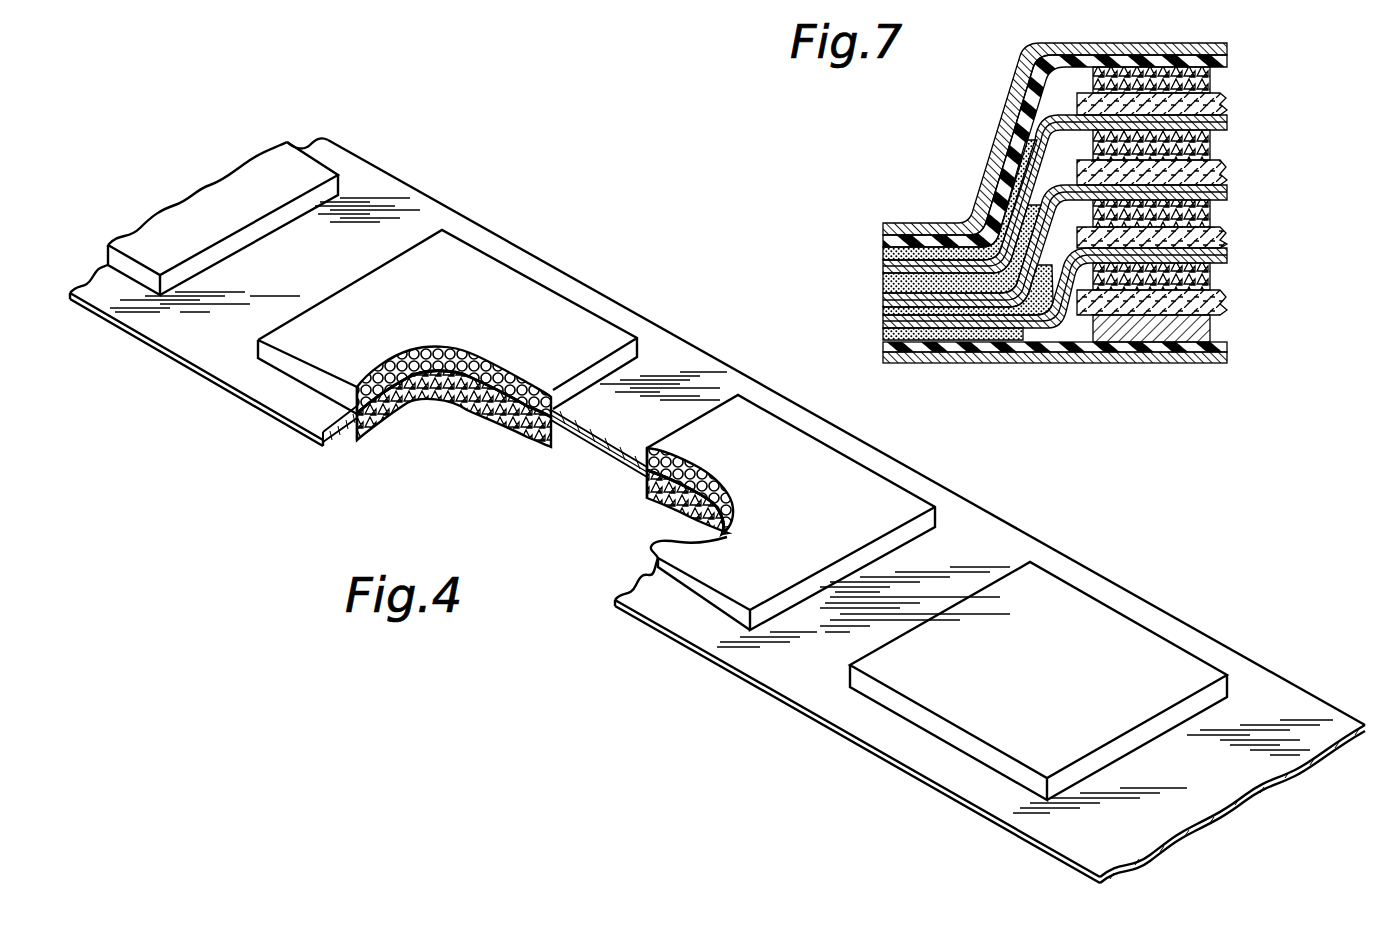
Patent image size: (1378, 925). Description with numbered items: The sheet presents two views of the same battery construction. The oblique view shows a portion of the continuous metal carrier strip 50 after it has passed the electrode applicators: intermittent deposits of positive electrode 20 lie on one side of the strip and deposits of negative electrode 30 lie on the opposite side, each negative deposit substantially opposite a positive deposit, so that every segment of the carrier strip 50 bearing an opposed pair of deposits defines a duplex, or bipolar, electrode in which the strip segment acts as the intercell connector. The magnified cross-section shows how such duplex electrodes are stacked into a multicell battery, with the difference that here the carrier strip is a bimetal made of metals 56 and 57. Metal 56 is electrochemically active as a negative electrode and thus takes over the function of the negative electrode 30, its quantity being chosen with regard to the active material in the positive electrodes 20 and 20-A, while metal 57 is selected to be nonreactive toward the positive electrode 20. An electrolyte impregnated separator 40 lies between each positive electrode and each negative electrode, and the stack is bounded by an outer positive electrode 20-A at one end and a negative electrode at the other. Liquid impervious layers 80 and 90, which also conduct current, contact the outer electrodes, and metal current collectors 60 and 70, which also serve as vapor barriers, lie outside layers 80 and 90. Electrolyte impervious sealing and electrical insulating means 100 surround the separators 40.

In FIG. 4, the positive electrode 20 is at (415, 400).
In FIG. 7, the positive electrode 20 is at (1212, 148).
In FIG. 7, the outer positive electrode 20-A is at (1212, 80).
In FIG. 4, the negative electrode 30 is at (220, 195).
In FIG. 7, the negative electrode 30 is at (1212, 330).
In FIG. 7, the electrolyte impregnated separator 40 is at (1230, 105).
In FIG. 4, the carrier strip 50 is at (380, 195).
In FIG. 7, the carrier strip 50 is at (1229, 185).
In FIG. 7, the active metal 56 is at (1229, 122).
In FIG. 7, the nonreactive metal 57 is at (1229, 128).
In FIG. 7, the metal current collector 60 is at (1229, 46).
In FIG. 7, the metal current collector 70 is at (1229, 360).
In FIG. 7, the liquid impervious layer 80 is at (1229, 60).
In FIG. 7, the liquid impervious layer 90 is at (1229, 347).
In FIG. 7, the sealing means 100 is at (883, 279).